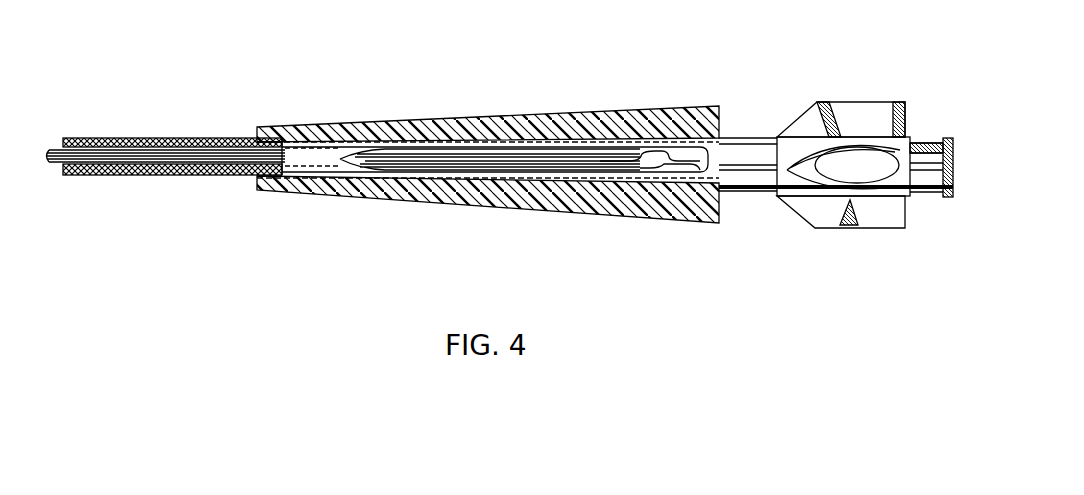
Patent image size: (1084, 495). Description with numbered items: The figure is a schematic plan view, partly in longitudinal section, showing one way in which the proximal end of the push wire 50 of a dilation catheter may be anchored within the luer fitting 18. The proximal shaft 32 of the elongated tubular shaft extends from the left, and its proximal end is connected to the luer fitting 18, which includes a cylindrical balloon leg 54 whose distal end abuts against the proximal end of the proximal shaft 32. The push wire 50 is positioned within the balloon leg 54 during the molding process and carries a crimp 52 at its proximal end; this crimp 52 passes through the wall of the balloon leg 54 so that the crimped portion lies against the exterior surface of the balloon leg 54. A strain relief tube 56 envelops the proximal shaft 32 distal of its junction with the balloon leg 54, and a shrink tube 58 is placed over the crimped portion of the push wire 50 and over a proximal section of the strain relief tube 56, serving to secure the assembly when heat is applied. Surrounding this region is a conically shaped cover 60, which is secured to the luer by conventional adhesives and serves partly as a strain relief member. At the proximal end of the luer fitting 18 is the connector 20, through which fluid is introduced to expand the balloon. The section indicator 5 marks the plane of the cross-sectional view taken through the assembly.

The proximal shaft 32 is at (71, 139).
The push wire 50 is at (157, 158).
The strain relief tube 56 is at (221, 142).
The shrink tube 58 is at (397, 150).
The balloon leg 54 is at (510, 150).
The crimp 52 is at (650, 158).
The conically shaped cover 60 is at (708, 113).
The connector 20 is at (953, 155).
The luer fitting 18 is at (930, 196).
The section line FIG. 5 is at (636, 245).